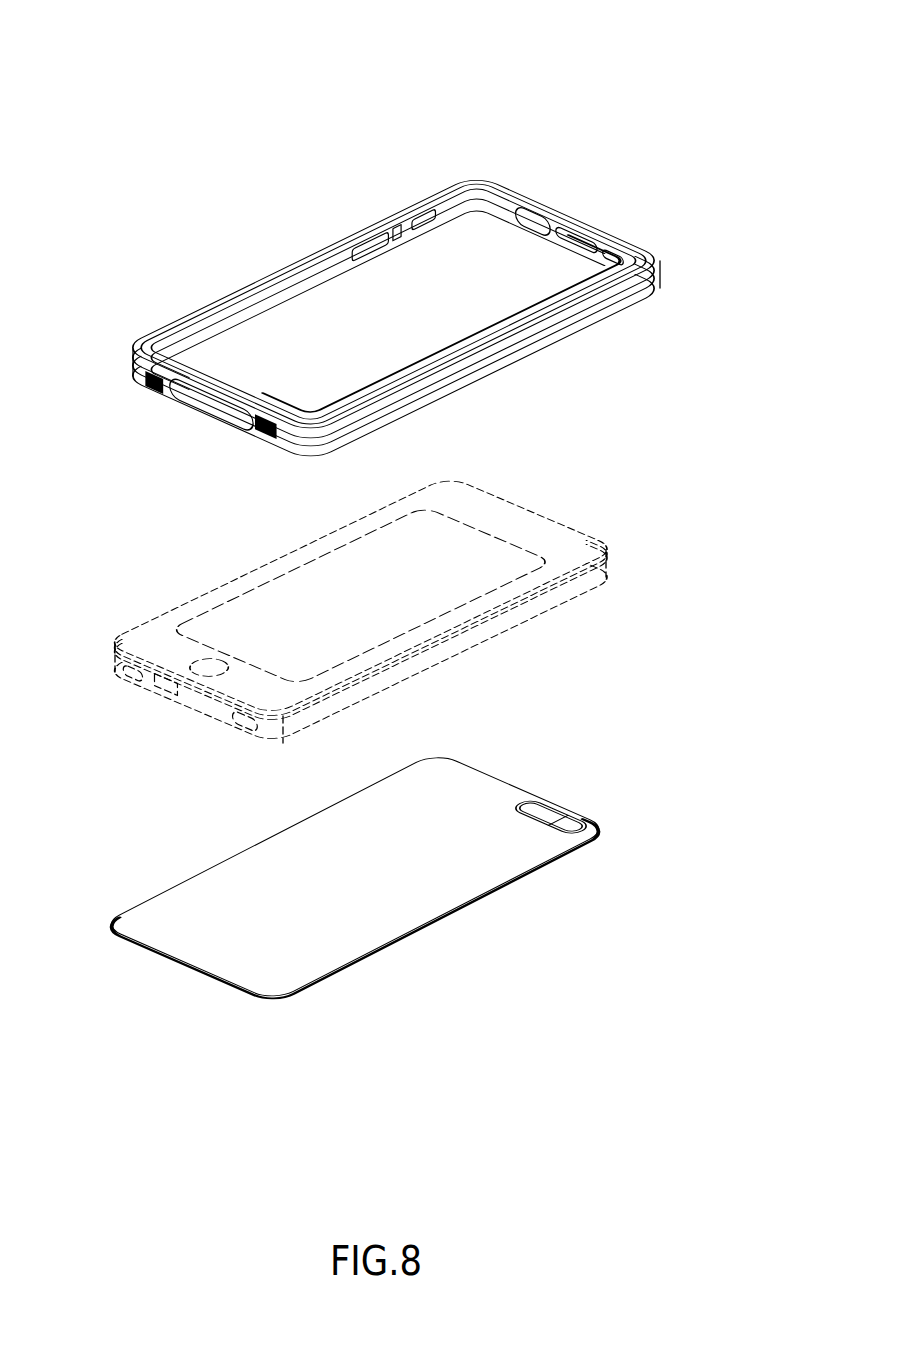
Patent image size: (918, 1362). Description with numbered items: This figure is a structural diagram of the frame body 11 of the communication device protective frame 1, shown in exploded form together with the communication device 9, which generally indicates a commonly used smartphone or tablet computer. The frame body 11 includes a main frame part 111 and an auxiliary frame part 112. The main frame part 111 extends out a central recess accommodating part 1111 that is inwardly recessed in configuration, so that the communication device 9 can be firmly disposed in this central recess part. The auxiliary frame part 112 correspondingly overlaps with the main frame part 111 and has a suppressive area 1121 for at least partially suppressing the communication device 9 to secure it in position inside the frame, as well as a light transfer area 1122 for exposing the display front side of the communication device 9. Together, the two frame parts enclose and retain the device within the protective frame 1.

The communication device protective frame 1 is at (139, 120).
The frame body 11 is at (737, 413).
The main frame part 111 is at (617, 307).
The central recess accommodating part 1111 is at (520, 335).
The auxiliary frame part 112 is at (622, 752).
The suppressive area 1121 is at (557, 857).
The light transfer area 1122 is at (312, 928).
The communication device 9 is at (558, 546).